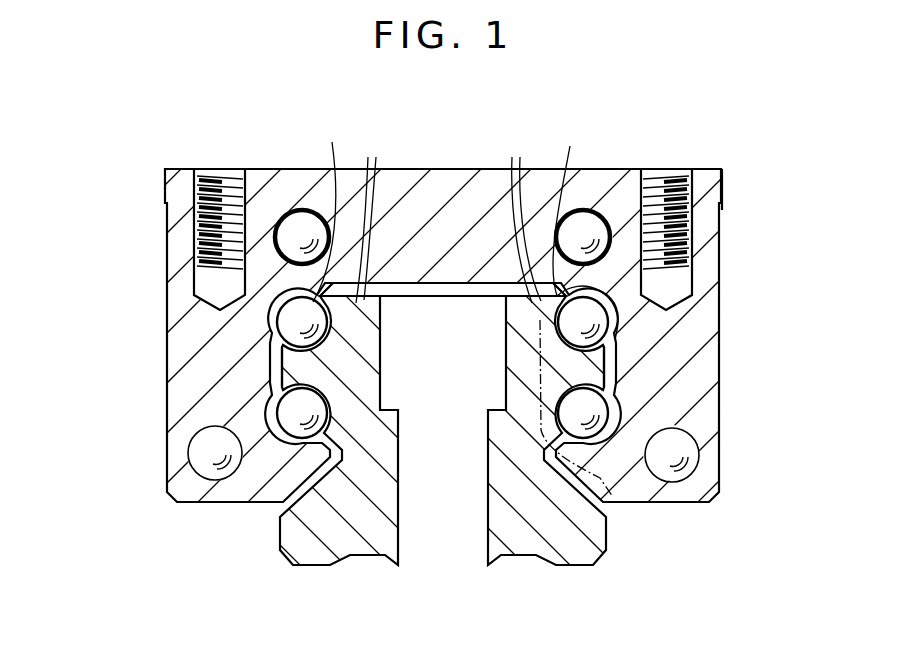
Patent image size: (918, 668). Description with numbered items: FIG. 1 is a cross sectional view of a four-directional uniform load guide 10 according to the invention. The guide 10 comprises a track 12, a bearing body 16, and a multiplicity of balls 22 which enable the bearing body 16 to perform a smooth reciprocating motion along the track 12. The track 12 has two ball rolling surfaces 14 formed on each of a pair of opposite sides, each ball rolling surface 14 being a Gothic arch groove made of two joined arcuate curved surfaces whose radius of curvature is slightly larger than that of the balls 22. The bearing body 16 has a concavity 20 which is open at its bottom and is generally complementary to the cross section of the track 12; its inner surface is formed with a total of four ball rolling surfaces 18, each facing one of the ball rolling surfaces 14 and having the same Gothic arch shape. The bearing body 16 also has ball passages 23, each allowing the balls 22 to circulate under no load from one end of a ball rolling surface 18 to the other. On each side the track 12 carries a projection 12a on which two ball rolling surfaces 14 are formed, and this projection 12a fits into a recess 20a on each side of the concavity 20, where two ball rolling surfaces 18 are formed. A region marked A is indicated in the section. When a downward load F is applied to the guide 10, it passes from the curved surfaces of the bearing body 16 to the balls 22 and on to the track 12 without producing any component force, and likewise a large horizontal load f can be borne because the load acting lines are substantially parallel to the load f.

The guide 10 is at (722, 170).
The track 12 is at (580, 555).
The projection 12a is at (270, 380).
The ball rolling surface 14 is at (445, 211).
The bearing body 16 is at (706, 343).
The ball rolling surface 18 is at (276, 323).
The concavity 20 is at (447, 282).
The recess 20a is at (273, 348).
The balls 22 is at (742, 410).
The ball passages 23 is at (284, 213).
The detail region A is at (613, 497).
The downward load F is at (452, 169).
The horizontal load f is at (163, 236).